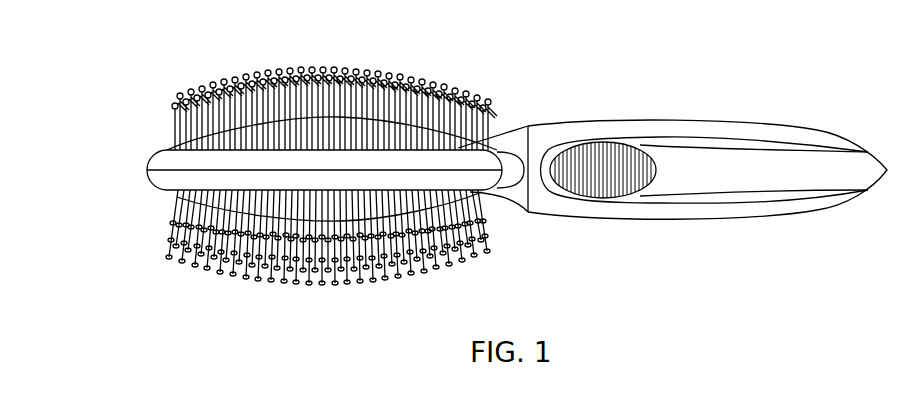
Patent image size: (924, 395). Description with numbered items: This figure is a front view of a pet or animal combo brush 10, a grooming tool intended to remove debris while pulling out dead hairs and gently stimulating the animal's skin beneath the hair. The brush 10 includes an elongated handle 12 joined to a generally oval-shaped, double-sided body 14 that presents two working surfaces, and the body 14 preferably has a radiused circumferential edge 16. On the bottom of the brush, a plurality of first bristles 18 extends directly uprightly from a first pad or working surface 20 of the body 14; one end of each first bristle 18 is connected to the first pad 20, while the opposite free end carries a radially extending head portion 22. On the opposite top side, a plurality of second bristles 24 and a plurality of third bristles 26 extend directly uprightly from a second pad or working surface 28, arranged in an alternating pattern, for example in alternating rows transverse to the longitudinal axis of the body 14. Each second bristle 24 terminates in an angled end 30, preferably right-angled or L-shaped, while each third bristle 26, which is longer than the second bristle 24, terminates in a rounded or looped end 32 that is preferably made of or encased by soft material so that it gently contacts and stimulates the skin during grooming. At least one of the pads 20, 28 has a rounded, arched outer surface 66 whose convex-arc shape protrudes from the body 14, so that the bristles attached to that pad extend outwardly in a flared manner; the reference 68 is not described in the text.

The combo brush 10 is at (144, 109).
The elongated handle 12 is at (708, 121).
The double-sided body 14 is at (168, 182).
The radiused circumferential edge 16 is at (166, 158).
The first bristles 18 is at (170, 222).
The first pad 20 is at (468, 194).
The head portion 22 is at (300, 284).
The second bristles 24 is at (178, 120).
The third bristles 26 is at (172, 100).
The second pad 28 is at (512, 140).
The angled end 30 is at (185, 103).
The rounded or looped end 32 is at (230, 84).
The rounded outer surface 66 is at (488, 138).
The bristle bed contour 68 is at (165, 149).